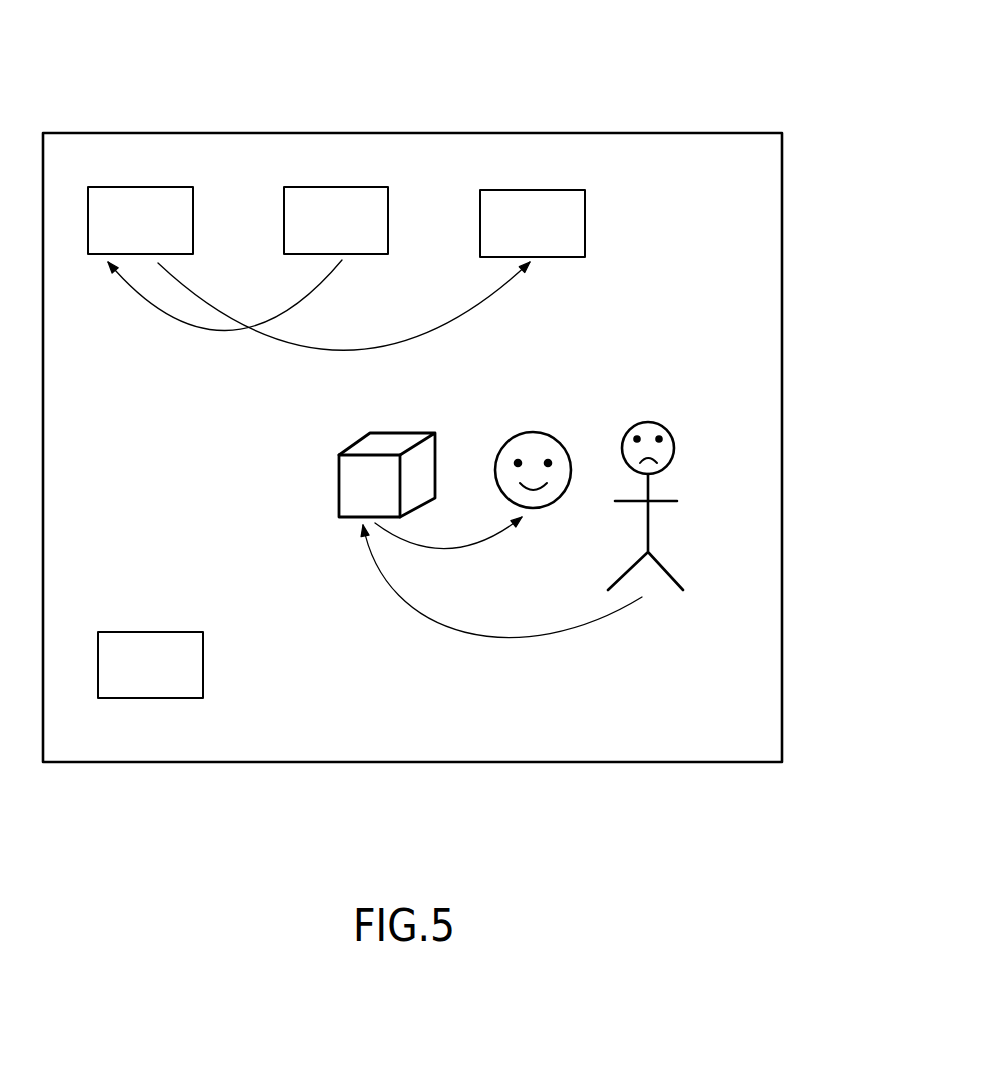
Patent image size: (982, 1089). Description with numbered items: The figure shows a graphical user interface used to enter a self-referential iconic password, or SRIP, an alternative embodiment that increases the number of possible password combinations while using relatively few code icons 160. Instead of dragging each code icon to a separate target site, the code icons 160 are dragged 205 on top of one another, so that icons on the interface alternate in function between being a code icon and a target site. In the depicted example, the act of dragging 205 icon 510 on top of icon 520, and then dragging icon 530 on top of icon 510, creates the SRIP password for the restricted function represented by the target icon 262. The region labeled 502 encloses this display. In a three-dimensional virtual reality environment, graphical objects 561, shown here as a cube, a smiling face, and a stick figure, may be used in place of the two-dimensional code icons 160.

The code icons 160 is at (527, 190).
The icon 510 is at (140, 220).
The icon 520 is at (532, 223).
The icon 530 is at (336, 220).
The dragging 205 is at (217, 330).
The display screen 502 is at (782, 427).
The graphical objects 561 is at (408, 437).
The target icon 262 is at (137, 637).